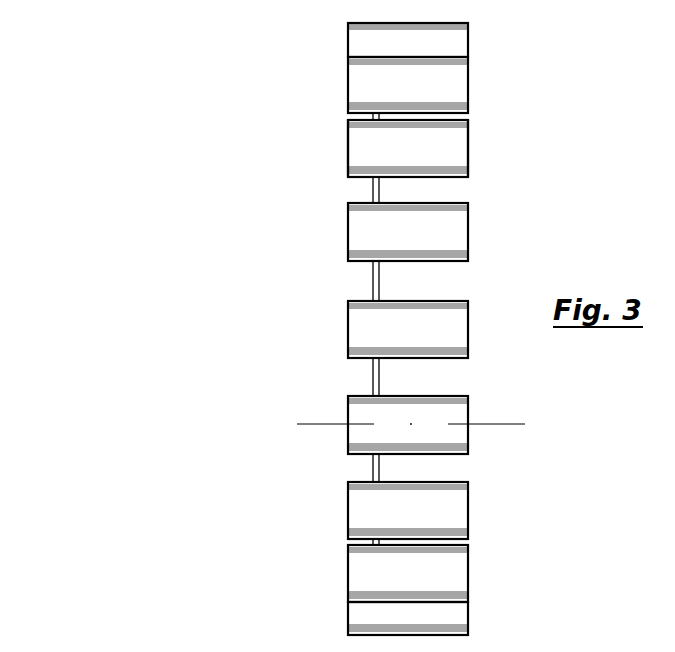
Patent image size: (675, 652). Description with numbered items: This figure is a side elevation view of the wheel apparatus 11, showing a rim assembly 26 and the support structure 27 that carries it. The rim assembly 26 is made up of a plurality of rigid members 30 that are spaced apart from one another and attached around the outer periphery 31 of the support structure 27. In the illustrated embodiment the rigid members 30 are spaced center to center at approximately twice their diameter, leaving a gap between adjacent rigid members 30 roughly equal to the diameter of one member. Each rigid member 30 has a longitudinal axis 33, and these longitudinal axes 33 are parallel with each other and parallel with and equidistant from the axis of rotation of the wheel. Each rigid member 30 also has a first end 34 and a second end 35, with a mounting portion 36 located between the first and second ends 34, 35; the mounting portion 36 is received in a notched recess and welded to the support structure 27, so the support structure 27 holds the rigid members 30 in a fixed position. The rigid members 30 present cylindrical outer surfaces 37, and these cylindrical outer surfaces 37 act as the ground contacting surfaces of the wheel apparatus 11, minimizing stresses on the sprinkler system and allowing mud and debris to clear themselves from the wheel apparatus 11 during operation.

The wheel apparatus 11 is at (192, 148).
The rim assembly 26 is at (451, 504).
The support structure 27 is at (373, 283).
The rigid members 30 is at (430, 136).
The outer periphery 31 is at (373, 372).
The longitudinal axes 33 is at (320, 425).
The first end 34 is at (348, 143).
The second end 35 is at (468, 152).
The mounting portion 36 is at (373, 180).
The cylindrical outer surfaces 37 is at (437, 317).